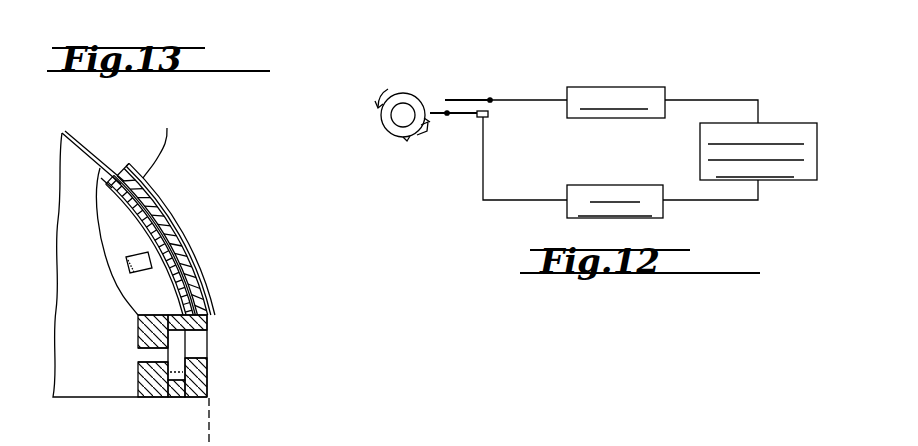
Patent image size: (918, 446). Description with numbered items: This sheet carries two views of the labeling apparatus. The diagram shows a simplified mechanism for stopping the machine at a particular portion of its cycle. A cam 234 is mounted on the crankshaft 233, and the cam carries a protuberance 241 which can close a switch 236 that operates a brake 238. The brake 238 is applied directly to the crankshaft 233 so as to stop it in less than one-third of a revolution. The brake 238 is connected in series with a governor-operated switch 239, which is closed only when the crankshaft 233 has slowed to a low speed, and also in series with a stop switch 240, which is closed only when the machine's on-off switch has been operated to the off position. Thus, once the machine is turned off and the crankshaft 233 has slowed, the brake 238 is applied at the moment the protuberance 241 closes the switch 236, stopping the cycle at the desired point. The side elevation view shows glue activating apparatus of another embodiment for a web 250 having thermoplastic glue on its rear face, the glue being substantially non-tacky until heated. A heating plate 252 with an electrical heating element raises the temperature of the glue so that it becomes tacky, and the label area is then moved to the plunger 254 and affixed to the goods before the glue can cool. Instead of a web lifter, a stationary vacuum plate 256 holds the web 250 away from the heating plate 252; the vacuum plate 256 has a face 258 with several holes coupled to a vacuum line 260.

In FIG. 12, the crankshaft 233 is at (398, 120).
In FIG. 12, the cam 234 is at (420, 64).
In FIG. 12, the switch 236 is at (468, 98).
In FIG. 12, the brake 238 is at (630, 72).
In FIG. 12, the governor-operated switch 239 is at (812, 109).
In FIG. 12, the stop switch 240 is at (645, 165).
In FIG. 12, the protuberance 241 is at (412, 134).
In FIG. 13, the web 250 is at (117, 143).
In FIG. 13, the heating plate 252 is at (189, 248).
In FIG. 13, the plunger 254 is at (186, 376).
In FIG. 13, the vacuum plate 256 is at (167, 287).
In FIG. 13, the face 258 is at (160, 212).
In FIG. 13, the vacuum line 260 is at (128, 265).